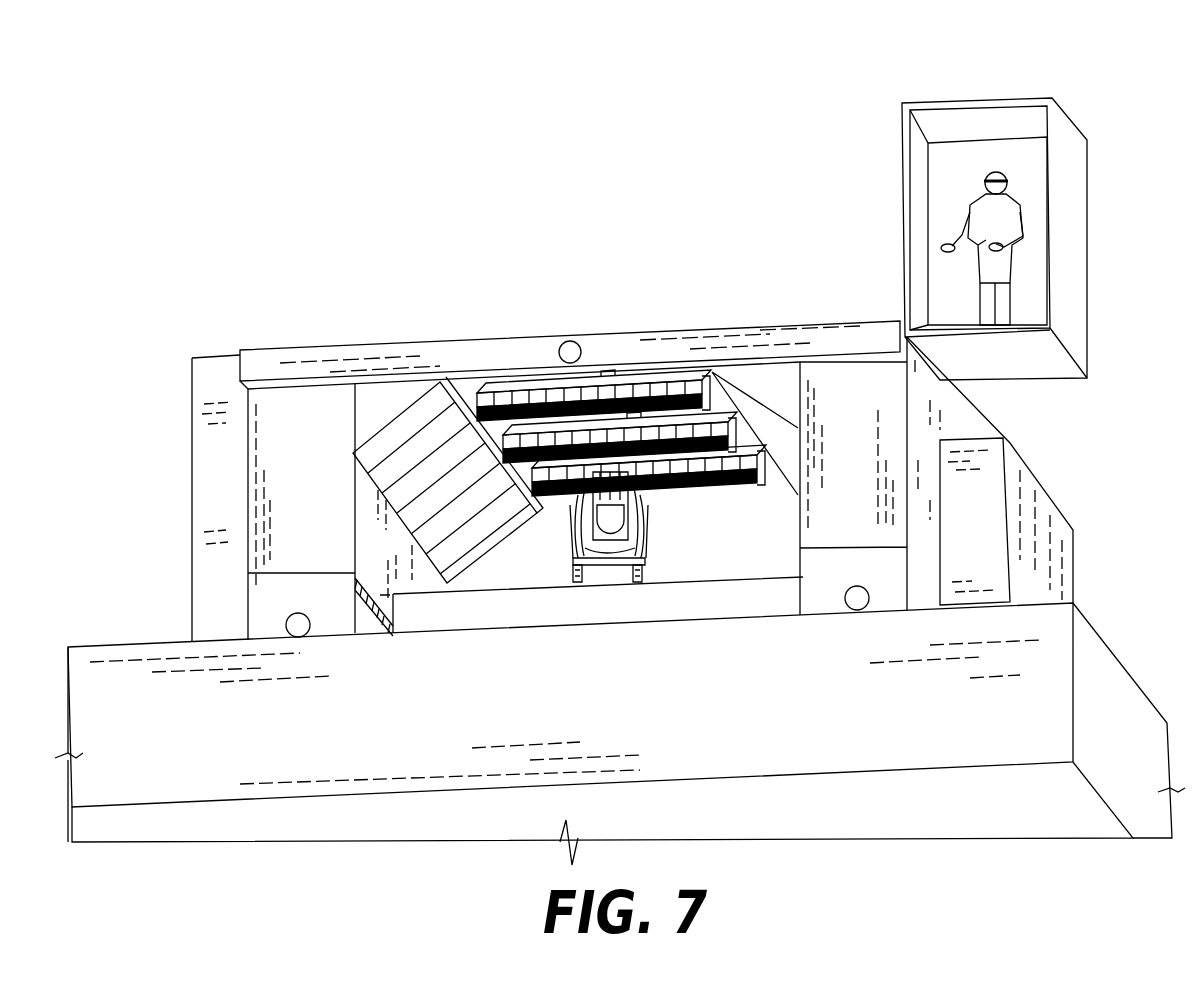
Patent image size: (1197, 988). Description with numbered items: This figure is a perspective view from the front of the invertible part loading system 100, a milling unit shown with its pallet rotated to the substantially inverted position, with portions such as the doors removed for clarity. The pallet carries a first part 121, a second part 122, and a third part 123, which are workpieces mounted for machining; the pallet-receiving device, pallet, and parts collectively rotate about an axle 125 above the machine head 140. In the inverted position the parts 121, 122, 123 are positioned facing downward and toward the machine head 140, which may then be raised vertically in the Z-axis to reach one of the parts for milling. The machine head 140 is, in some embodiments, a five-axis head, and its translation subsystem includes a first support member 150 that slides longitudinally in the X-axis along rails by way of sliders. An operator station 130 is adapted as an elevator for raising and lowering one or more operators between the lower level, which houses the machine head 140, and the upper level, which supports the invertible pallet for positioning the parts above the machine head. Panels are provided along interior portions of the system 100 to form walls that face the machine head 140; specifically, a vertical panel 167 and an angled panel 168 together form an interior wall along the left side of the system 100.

The invertible part loading system 100 is at (446, 216).
The first part 121 is at (508, 400).
The second part 122 is at (744, 457).
The third part 123 is at (723, 435).
The axle 125 is at (572, 341).
The operator station 130 is at (1060, 131).
The machine head 140 is at (658, 517).
The first support member 150 is at (498, 612).
The vertical panel 167 is at (393, 542).
The angled panel 168 is at (412, 436).